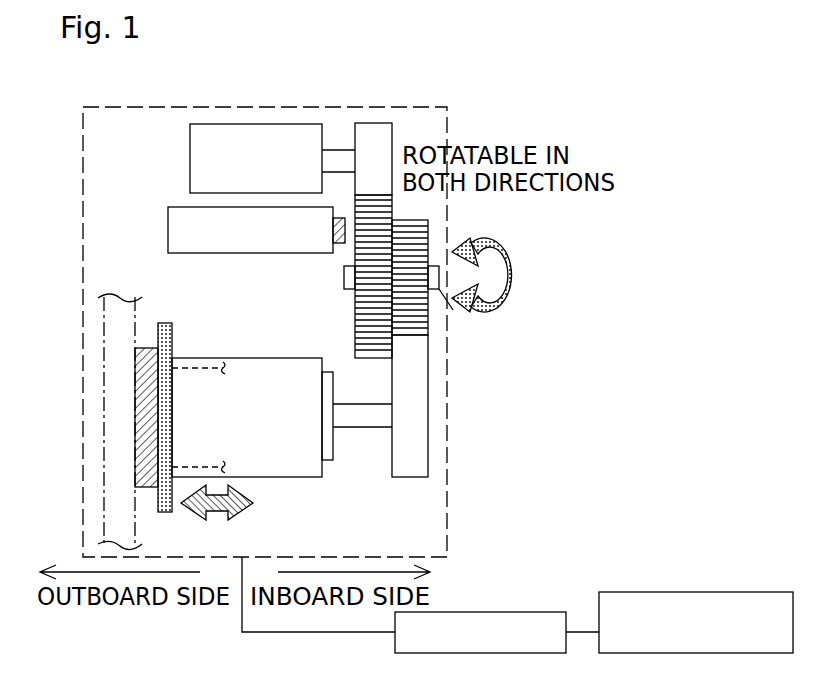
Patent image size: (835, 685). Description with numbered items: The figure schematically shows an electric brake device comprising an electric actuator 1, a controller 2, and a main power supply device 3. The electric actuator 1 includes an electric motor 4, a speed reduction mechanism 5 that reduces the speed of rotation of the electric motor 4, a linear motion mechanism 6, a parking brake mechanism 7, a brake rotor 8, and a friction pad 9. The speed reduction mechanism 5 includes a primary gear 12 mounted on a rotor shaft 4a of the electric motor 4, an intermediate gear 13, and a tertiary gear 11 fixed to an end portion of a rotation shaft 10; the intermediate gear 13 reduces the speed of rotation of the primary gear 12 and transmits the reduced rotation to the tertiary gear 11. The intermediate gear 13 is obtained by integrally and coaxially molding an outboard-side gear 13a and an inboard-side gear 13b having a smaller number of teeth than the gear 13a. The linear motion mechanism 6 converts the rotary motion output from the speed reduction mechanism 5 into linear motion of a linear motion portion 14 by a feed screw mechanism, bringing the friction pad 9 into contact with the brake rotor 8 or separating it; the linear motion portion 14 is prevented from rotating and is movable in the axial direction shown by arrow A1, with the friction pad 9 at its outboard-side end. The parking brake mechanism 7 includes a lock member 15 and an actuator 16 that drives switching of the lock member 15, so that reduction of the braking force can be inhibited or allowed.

The electric actuator 1 is at (82, 172).
The controller 2 is at (450, 612).
The main power supply device 3 is at (655, 592).
The electric motor 4 is at (255, 124).
The rotor shaft 4a is at (338, 152).
The speed reduction mechanism 5 is at (623, 110).
The linear motion mechanism 6 is at (333, 462).
The parking brake mechanism 7 is at (327, 306).
The brake rotor 8 is at (115, 318).
The friction pad 9 is at (135, 487).
The rotation shaft 10 is at (367, 420).
The tertiary gear 11 is at (423, 398).
The primary gear 12 is at (383, 133).
The intermediate gear 13 is at (573, 323).
The outboard-side gear 13a is at (380, 359).
The inboard-side gear 13b is at (430, 323).
The linear motion portion 14 is at (160, 372).
The lock member 15 is at (338, 243).
The actuator 16 is at (250, 253).
The arrow A1 is at (253, 506).